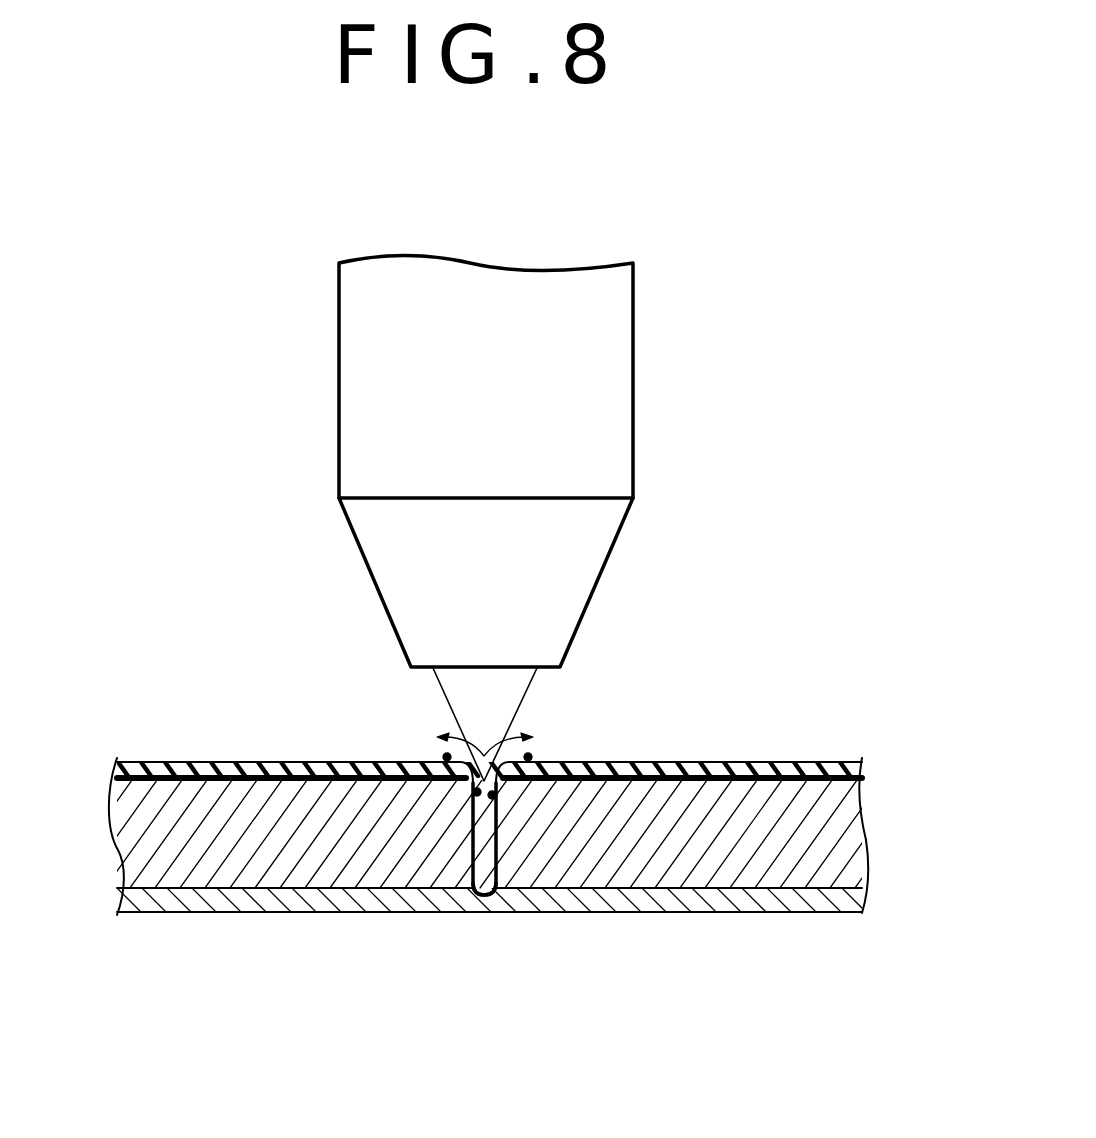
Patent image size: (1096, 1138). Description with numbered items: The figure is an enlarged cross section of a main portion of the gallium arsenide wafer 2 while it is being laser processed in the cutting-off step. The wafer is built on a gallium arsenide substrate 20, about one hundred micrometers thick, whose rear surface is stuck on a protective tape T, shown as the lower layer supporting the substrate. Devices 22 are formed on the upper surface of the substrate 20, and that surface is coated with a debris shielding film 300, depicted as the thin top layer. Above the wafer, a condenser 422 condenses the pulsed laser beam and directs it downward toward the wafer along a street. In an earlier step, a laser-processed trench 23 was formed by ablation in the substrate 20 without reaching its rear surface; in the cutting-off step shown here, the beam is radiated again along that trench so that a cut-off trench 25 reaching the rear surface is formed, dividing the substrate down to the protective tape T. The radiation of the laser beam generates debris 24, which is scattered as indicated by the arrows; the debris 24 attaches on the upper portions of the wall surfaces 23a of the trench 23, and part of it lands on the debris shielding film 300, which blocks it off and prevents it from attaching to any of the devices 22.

The condenser 422 is at (607, 384).
The gallium arsenide wafer 2 is at (474, 796).
The debris shielding film 300 is at (686, 762).
The devices 22 is at (182, 762).
The debris 24 is at (477, 792).
The laser-processed trenches 23 is at (490, 812).
The wall surfaces 23a is at (475, 889).
The cut-off trenches 25 is at (482, 830).
The gallium arsenide substrate 20 is at (752, 877).
The protective tape T is at (237, 905).